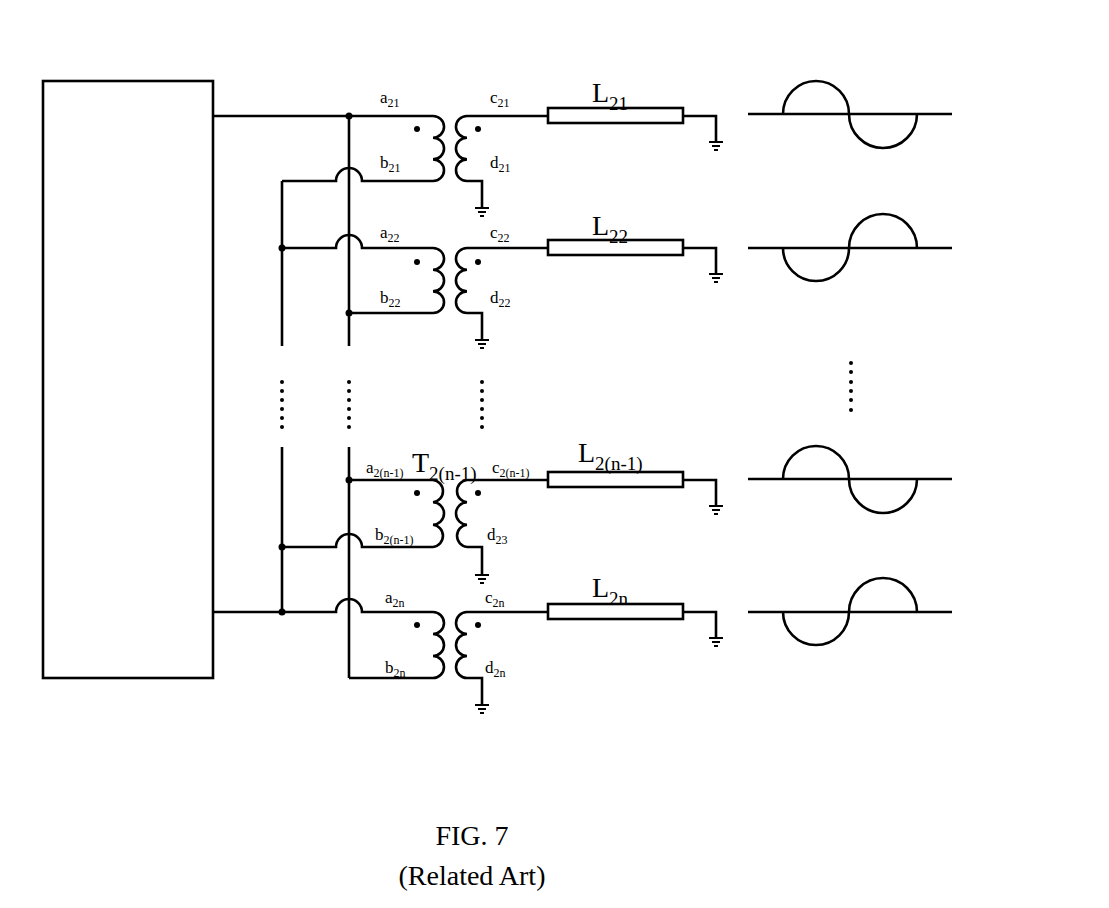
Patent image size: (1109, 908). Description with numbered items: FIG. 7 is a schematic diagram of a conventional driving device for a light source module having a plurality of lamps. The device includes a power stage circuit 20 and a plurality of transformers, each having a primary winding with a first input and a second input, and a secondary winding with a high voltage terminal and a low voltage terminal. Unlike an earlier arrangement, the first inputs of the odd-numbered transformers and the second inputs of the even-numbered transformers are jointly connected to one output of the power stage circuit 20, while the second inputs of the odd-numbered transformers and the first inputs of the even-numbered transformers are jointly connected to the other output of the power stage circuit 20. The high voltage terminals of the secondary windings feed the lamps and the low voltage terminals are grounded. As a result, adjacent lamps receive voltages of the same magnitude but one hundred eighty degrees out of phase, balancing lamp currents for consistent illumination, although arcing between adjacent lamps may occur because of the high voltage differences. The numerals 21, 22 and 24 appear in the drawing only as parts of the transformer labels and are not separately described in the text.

The power stage circuit 20 is at (112, 81).
The transformer T21 21 is at (447, 131).
The transformer T22 22 is at (447, 264).
The transformer T24 24 is at (447, 629).